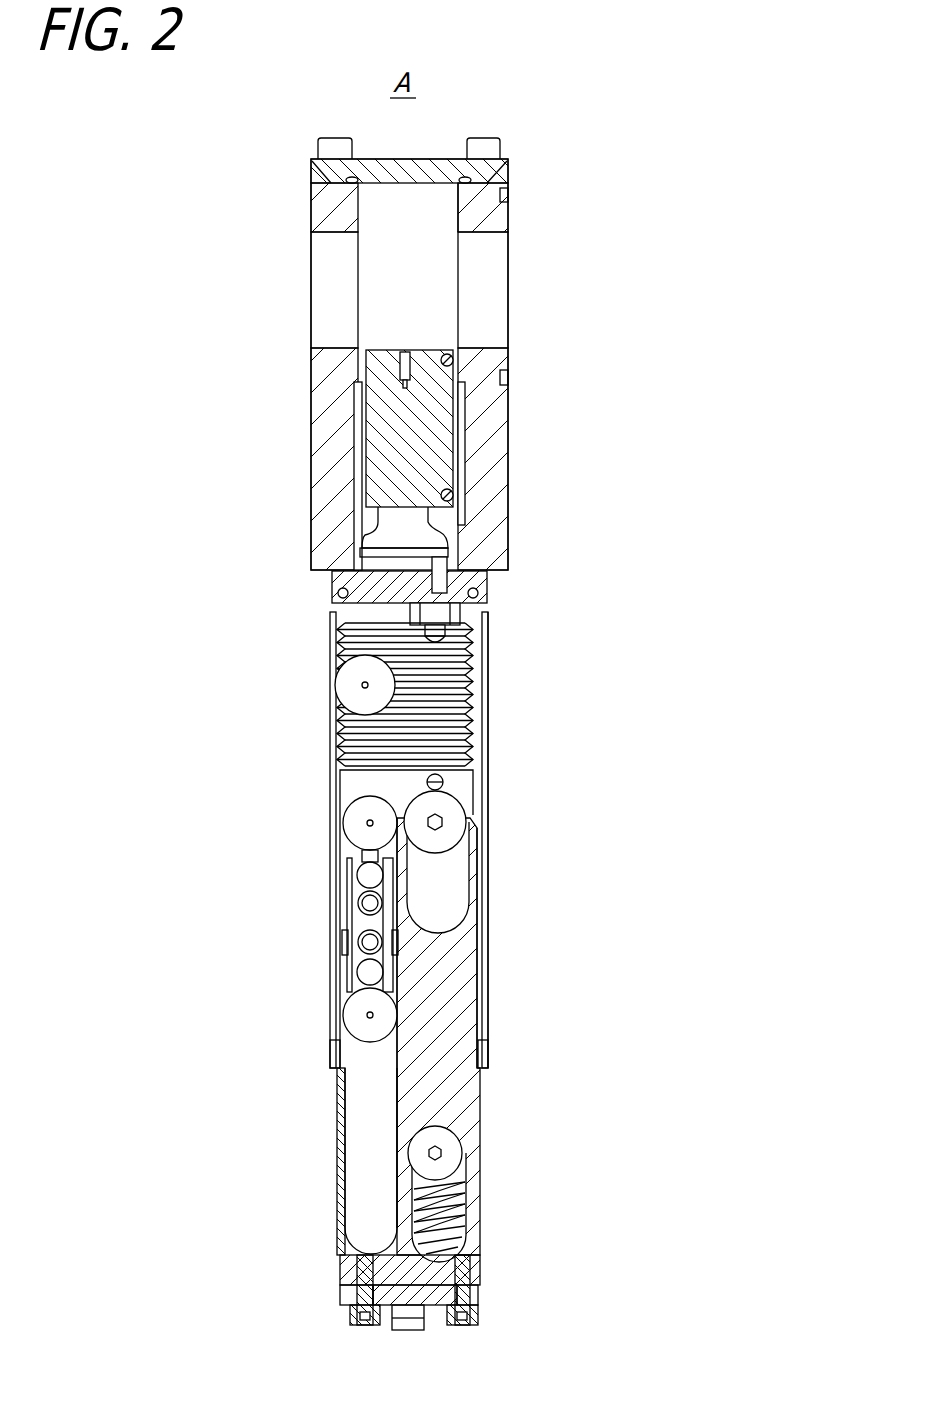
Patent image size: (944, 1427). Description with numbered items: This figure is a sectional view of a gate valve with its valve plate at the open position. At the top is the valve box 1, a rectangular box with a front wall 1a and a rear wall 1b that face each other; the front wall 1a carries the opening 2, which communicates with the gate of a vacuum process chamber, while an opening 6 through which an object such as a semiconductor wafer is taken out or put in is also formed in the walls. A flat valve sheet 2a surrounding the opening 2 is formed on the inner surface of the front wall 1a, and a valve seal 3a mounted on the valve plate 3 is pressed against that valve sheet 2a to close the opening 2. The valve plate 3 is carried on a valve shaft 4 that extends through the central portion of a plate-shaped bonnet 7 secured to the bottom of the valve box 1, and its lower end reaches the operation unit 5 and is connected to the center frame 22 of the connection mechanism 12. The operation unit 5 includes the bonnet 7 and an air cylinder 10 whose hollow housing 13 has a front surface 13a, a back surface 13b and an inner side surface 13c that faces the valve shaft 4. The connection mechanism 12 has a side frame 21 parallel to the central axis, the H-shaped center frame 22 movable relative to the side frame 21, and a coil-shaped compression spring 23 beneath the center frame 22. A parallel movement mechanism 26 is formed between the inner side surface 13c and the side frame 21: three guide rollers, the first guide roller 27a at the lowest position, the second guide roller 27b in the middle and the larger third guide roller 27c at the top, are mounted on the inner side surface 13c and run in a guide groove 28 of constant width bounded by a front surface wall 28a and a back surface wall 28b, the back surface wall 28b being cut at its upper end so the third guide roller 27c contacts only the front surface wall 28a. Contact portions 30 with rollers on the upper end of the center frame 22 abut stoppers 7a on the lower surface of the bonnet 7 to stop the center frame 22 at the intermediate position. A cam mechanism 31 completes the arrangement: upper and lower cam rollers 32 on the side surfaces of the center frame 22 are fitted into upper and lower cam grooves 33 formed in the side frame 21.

The valve box 1 is at (423, 318).
The front wall 1a is at (485, 212).
The rear wall 1b is at (335, 205).
The opening 2 is at (485, 265).
The valve sheet 2a is at (458, 214).
The valve plate 3 is at (395, 440).
The valve seal 3a is at (455, 358).
The valve shaft 4 is at (390, 540).
The operation unit 5 is at (447, 968).
The opening 6 is at (335, 258).
The bonnet 7 is at (440, 582).
The stopper 7a is at (483, 623).
The air cylinder 10 is at (504, 968).
The connection mechanism 12 is at (314, 1154).
The housing 13 is at (418, 837).
The front surface 13a is at (488, 703).
The back surface 13b is at (330, 725).
The inner side surface 13c is at (480, 668).
The side frame 21 is at (435, 1025).
The center frame 22 is at (345, 782).
The compression spring 23 is at (450, 1215).
The parallel movement mechanism 26 is at (300, 919).
The first guide roller 27a is at (358, 1018).
The second guide roller 27b is at (360, 833).
The third guide roller 27c is at (365, 683).
The guide groove 28 is at (375, 1203).
The front surface wall 28a is at (395, 1075).
The back surface wall 28b is at (340, 950).
The contact portion 30 is at (437, 770).
The cam mechanism 31 is at (524, 859).
The cam roller 32 is at (440, 810).
The cam groove 33 is at (450, 895).